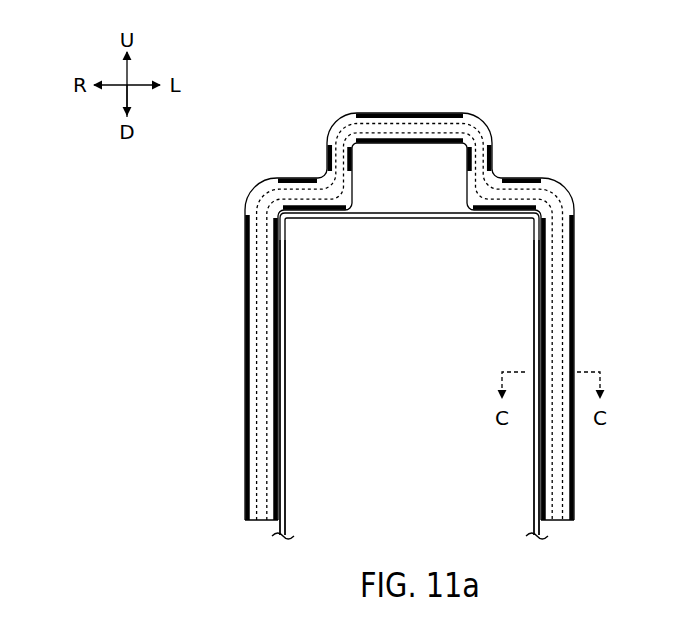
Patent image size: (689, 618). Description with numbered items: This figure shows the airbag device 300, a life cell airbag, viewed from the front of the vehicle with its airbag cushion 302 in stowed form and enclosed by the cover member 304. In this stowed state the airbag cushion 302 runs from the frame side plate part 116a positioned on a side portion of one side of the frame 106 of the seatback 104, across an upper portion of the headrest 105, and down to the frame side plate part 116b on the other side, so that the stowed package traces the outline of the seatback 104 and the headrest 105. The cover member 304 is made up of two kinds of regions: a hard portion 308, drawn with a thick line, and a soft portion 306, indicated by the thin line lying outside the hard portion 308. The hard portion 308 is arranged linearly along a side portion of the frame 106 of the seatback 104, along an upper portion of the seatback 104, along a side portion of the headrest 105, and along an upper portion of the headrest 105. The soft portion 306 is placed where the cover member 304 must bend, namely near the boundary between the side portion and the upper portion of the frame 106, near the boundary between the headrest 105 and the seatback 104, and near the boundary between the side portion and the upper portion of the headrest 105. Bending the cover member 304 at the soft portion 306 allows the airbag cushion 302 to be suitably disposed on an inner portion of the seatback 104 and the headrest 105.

The airbag device 300 is at (313, 81).
The headrest 105 is at (403, 155).
The cover member 304 is at (485, 113).
The seatback 104 is at (268, 206).
The soft portion 306 is at (567, 184).
The hard portion 308 is at (575, 292).
The airbag cushion 302 is at (558, 333).
The frame 106 is at (284, 320).
The frame side plate part 116a is at (534, 331).
The frame side plate part 116b is at (284, 398).